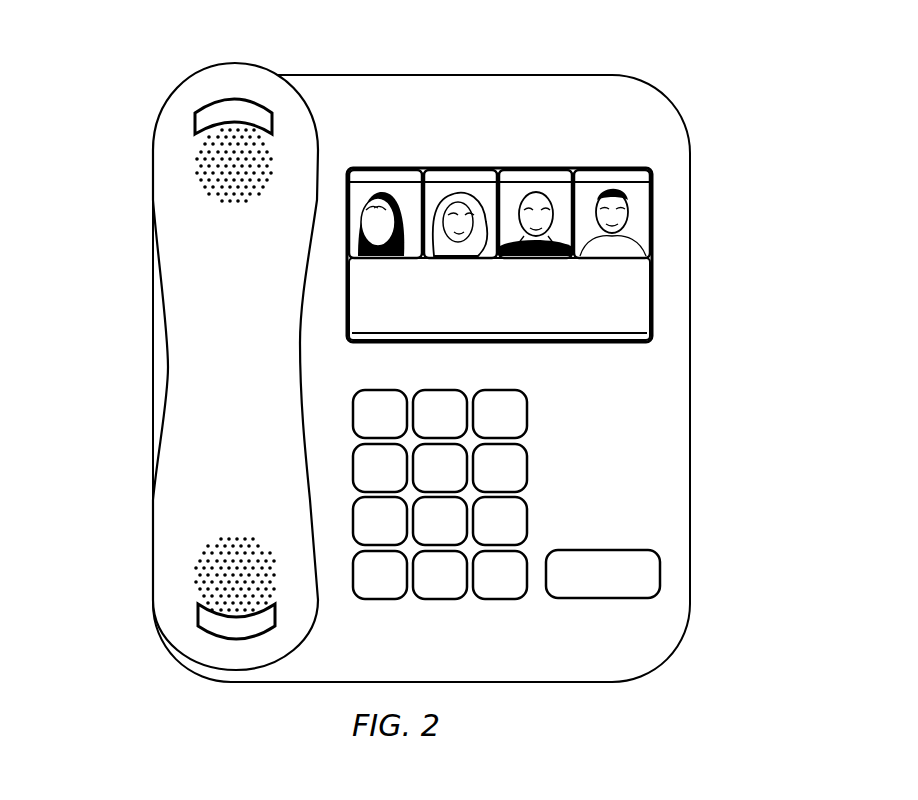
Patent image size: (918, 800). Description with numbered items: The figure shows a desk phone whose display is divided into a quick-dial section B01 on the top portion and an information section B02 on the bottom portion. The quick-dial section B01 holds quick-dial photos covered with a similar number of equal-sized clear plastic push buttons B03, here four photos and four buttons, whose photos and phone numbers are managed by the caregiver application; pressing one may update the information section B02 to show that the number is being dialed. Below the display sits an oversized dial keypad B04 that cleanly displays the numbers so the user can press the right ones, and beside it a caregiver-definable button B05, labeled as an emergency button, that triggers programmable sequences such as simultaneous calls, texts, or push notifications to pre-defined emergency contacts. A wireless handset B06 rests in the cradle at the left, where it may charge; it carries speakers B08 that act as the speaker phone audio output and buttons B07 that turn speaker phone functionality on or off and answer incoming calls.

The quick-dial section B01 is at (580, 201).
The information section B02 is at (662, 305).
The clear plastic push buttons B03 is at (499, 143).
The oversized dial keypad B04 is at (503, 603).
The caregiver-definable button B05 is at (665, 562).
The wireless handset B06 is at (150, 117).
The handset buttons B07 is at (262, 93).
The speakers B08 is at (167, 374).